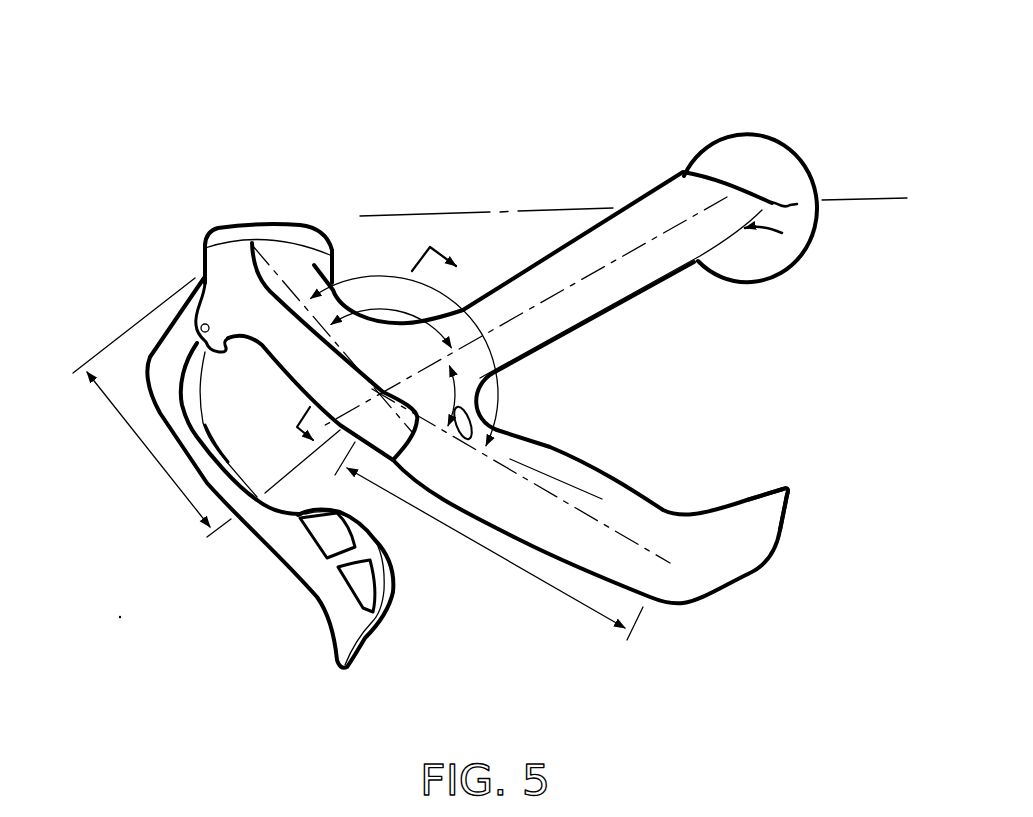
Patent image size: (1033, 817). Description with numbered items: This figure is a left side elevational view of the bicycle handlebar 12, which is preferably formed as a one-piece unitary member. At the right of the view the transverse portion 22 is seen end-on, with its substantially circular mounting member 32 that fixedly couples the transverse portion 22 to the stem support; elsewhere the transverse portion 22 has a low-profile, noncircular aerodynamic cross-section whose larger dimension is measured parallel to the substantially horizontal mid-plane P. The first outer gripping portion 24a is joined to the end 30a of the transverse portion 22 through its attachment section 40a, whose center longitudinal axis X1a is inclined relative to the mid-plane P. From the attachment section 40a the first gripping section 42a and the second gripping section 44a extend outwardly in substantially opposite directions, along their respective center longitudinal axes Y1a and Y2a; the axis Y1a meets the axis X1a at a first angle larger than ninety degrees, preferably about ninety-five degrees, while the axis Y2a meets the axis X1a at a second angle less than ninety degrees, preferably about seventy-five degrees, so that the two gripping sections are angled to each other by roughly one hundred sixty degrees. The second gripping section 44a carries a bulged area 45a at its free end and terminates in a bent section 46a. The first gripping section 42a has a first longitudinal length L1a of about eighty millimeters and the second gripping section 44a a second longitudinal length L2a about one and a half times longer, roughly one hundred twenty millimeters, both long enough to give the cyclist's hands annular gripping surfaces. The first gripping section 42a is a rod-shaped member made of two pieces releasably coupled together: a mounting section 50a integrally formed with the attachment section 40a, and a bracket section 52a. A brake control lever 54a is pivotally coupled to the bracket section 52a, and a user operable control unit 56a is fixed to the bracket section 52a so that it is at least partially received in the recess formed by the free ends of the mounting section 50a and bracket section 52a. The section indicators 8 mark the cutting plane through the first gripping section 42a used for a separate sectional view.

The handlebar 12 is at (685, 91).
The transverse portion 22 is at (790, 280).
The mounting member 32 is at (816, 214).
The end 30a is at (698, 172).
The attachment section 40a is at (612, 213).
The mid-plane P is at (870, 197).
The center longitudinal axis of attachment section X1a is at (584, 278).
The center longitudinal axis of first gripping section Y1a is at (275, 247).
The center longitudinal axis of second gripping section Y2a is at (605, 520).
The user operable control unit 56a is at (222, 241).
The mounting section 50a is at (277, 250).
The bracket section 52a is at (215, 273).
The first outer gripping portion 24a is at (176, 252).
The first gripping section 42a is at (260, 369).
The control lever 54a is at (294, 562).
The second gripping section 44a is at (606, 461).
The bulged area 45a is at (547, 458).
The bent section 46a is at (767, 485).
The first longitudinal length L1a is at (182, 495).
The second longitudinal length L2a is at (546, 590).
The section line 8- 8 is at (369, 364).